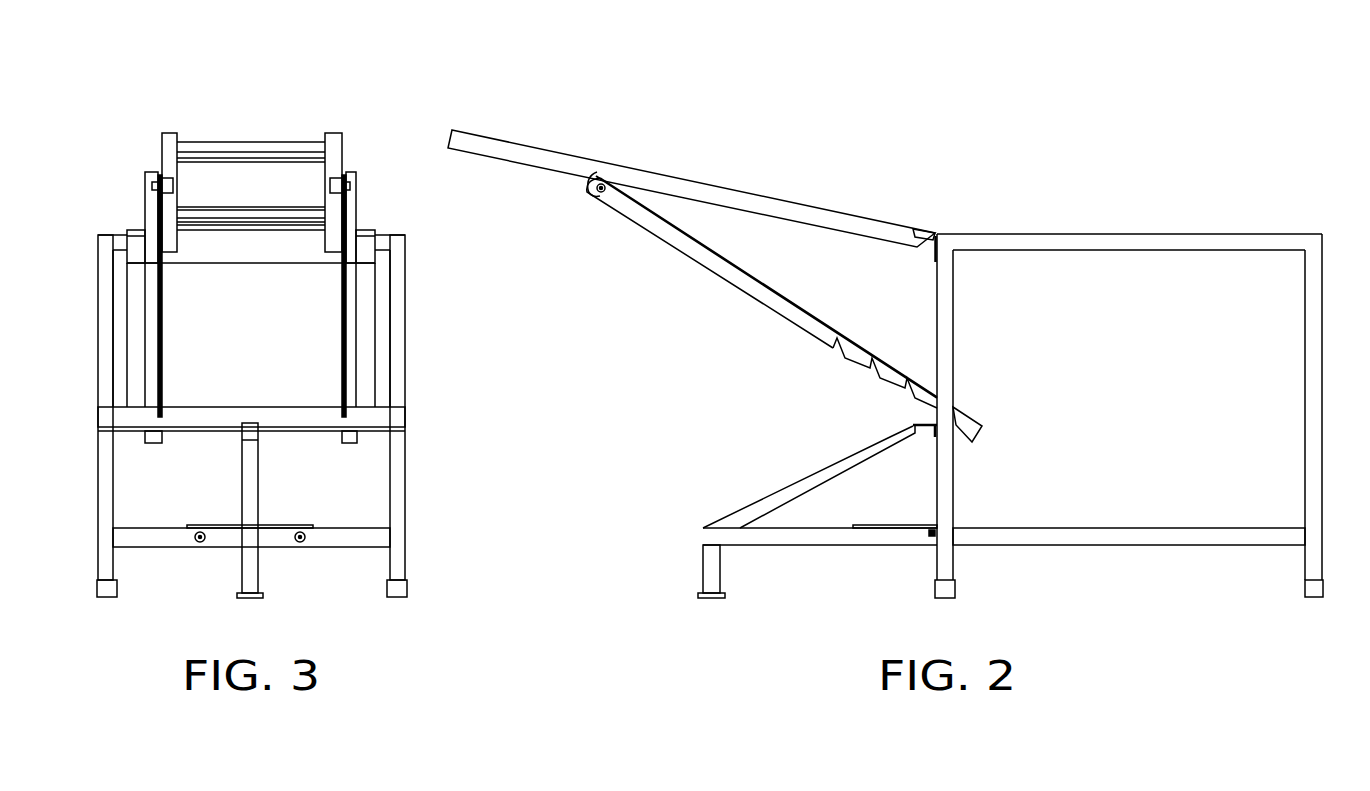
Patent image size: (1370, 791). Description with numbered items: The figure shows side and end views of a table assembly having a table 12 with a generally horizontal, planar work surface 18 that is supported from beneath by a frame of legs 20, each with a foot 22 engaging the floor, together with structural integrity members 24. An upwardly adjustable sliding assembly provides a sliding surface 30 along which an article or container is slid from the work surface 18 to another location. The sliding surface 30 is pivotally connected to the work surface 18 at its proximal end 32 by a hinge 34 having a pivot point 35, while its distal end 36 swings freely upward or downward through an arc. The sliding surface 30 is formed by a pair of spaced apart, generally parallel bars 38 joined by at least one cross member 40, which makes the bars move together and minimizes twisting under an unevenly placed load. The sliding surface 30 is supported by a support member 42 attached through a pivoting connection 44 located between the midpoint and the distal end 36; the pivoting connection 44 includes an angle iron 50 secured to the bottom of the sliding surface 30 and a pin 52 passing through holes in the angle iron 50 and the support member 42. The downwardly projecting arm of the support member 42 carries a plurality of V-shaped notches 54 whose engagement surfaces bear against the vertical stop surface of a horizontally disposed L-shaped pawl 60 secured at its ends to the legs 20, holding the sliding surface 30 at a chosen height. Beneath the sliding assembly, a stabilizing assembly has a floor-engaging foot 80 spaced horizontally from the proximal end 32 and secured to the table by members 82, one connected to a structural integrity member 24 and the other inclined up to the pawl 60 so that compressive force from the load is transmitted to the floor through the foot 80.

In FIG. 2, the table 12 is at (1073, 212).
In FIG. 3, the work surface 18 is at (110, 233).
In FIG. 2, the work surface 18 is at (1115, 233).
In FIG. 3, the legs 20 is at (98, 323).
In FIG. 2, the legs 20 is at (957, 478).
In FIG. 3, the feet 22 is at (97, 588).
In FIG. 2, the feet 22 is at (955, 585).
In FIG. 3, the structural integrity members 24 is at (333, 542).
In FIG. 2, the structural integrity members 24 is at (1128, 250).
In FIG. 2, the sliding surface 30 is at (658, 173).
In FIG. 2, the proximal end 32 is at (902, 208).
In FIG. 3, the hinge 34 is at (363, 227).
In FIG. 2, the hinge 34 is at (920, 228).
In FIG. 2, the pivot point 35 is at (938, 232).
In FIG. 2, the distal end 36 is at (492, 122).
In FIG. 2, the bars 38 is at (533, 160).
In FIG. 3, the cross member 40 is at (222, 212).
In FIG. 3, the support member 42 is at (349, 321).
In FIG. 2, the support member 42 is at (738, 280).
In FIG. 2, the pivoting connection 44 is at (593, 200).
In FIG. 3, the angle iron 50 is at (330, 173).
In FIG. 3, the pin 52 is at (330, 188).
In FIG. 2, the notches 54 is at (866, 376).
In FIG. 3, the pawl 60 is at (280, 415).
In FIG. 2, the pawl 60 is at (927, 432).
In FIG. 3, the foot 80 is at (235, 588).
In FIG. 2, the foot 80 is at (693, 577).
In FIG. 3, the members 82 is at (260, 467).
In FIG. 2, the members 82 is at (825, 473).